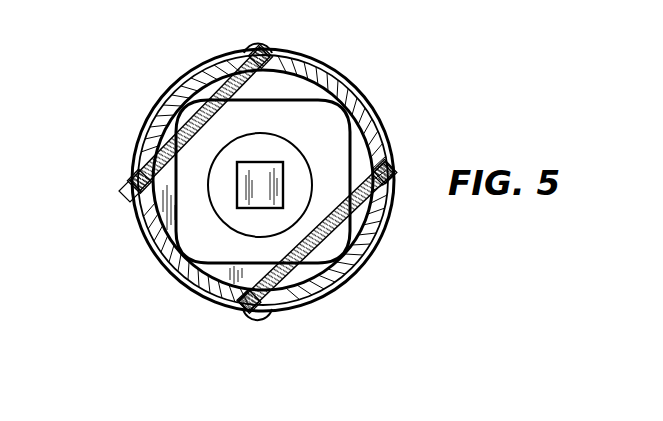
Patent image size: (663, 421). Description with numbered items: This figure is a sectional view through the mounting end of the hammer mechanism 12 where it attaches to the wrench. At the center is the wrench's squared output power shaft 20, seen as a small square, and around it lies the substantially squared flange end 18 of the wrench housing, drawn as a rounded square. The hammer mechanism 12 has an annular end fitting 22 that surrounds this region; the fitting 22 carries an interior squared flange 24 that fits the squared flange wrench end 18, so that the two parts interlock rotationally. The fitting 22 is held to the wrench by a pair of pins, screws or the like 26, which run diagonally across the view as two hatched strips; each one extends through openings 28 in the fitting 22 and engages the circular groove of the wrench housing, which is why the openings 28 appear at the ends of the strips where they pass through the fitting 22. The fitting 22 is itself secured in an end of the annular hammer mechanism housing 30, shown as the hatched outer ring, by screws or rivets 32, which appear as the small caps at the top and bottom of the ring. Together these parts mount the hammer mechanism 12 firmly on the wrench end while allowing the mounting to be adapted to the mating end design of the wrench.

The hammer mechanism 12 is at (358, 79).
The squared flange end 18 is at (350, 237).
The squared output power shaft 20 is at (266, 180).
The annular end fitting 22 is at (340, 291).
The interior squared flange 24 is at (333, 163).
The pins or screws 26 is at (265, 88).
The openings 28 is at (115, 198).
The annular hammer mechanism housing 30 is at (320, 297).
The screws or rivets 32 is at (253, 44).